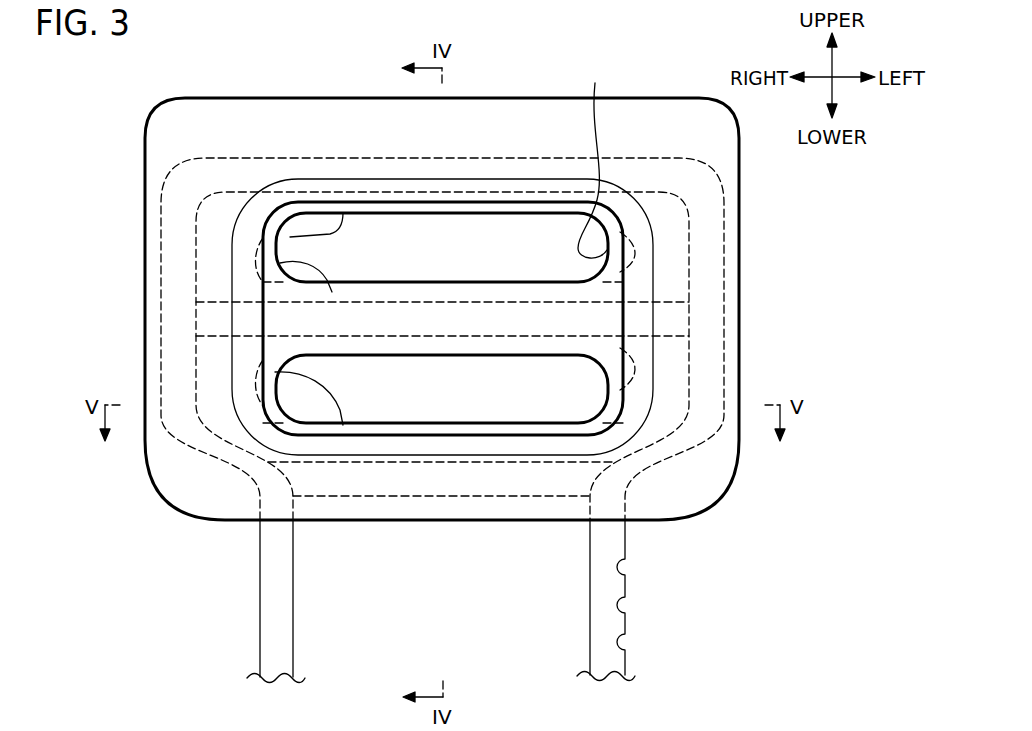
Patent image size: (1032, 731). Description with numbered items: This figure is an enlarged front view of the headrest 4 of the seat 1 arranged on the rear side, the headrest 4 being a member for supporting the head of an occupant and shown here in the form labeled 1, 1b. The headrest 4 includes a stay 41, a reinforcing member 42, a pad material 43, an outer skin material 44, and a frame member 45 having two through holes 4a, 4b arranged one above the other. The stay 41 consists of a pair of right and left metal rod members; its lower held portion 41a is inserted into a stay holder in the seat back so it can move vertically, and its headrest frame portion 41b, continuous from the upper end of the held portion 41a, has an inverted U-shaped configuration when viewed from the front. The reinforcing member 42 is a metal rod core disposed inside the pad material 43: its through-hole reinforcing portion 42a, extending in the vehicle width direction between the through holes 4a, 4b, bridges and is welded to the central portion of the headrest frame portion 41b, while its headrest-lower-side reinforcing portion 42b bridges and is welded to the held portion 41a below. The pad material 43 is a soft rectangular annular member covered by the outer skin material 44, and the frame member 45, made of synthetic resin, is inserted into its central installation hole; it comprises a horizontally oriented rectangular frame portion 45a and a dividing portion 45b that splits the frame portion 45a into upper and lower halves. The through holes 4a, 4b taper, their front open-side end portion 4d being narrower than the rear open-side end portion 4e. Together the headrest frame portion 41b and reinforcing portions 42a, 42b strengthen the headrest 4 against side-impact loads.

The seat 1 is at (445, 349).
The reactor (second embodiment) 1b is at (328, 67).
The headrest 4 is at (126, 163).
The through hole 4a is at (511, 237).
The through hole 4b is at (478, 408).
The open-side end portion 4d is at (567, 545).
The open-side end portion 4e is at (630, 233).
The stay 41 is at (785, 487).
The held portion 41a is at (627, 584).
The headrest frame portion 41b is at (723, 405).
The reinforcing member 42 is at (529, 376).
The through-hole reinforcing portion 42a is at (668, 302).
The headrest-lower-side reinforcing portion 42b is at (330, 497).
The pad material 43 is at (705, 143).
The outer skin material 44 is at (740, 318).
The frame member 45 is at (78, 237).
The frame portion 45a is at (290, 237).
The dividing portion 45b is at (280, 263).